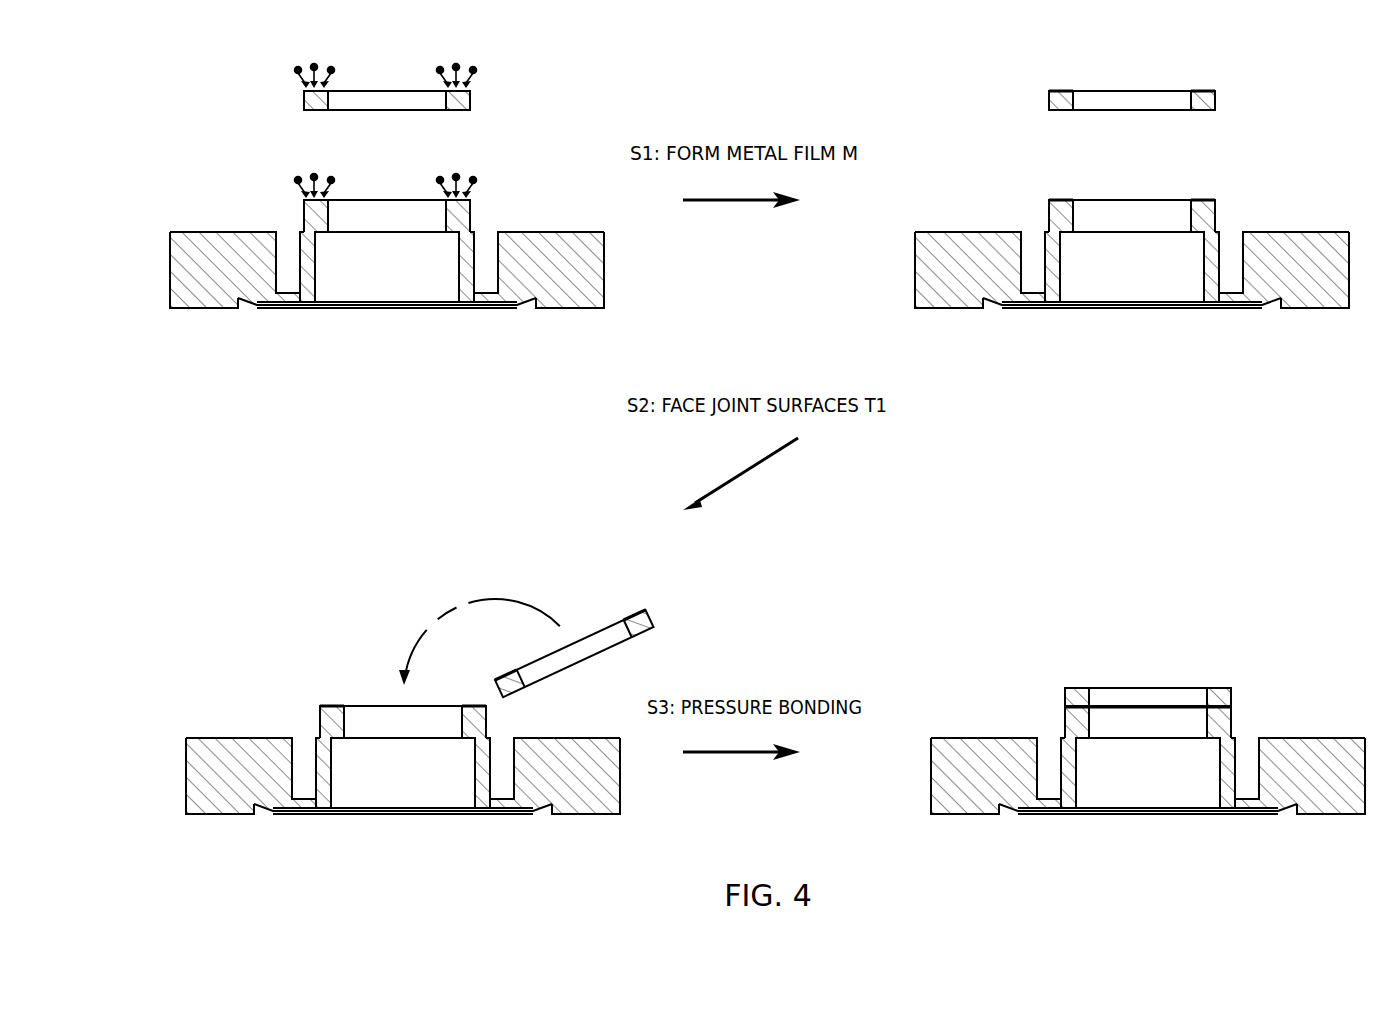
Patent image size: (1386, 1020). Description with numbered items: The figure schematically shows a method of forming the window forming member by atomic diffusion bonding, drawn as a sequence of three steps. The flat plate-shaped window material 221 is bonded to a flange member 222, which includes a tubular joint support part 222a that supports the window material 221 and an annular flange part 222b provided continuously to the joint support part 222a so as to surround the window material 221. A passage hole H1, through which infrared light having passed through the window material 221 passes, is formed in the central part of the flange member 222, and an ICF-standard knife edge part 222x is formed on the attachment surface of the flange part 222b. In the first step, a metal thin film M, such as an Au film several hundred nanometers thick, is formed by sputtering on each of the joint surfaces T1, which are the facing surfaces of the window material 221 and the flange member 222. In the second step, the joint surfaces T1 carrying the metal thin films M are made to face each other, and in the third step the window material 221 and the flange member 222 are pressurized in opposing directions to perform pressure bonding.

The window material 221 is at (470, 100).
The flange member 222 is at (170, 268).
The joint support part 222a is at (330, 214).
The flange part 222b is at (211, 232).
The knife edge part 222x is at (258, 307).
The passage hole H1 is at (426, 267).
The joint surface T1 is at (311, 88).
The metal thin film M is at (775, 399).